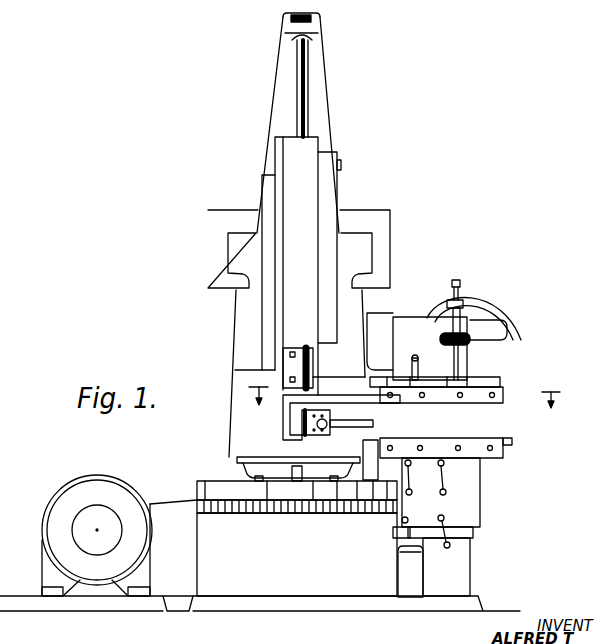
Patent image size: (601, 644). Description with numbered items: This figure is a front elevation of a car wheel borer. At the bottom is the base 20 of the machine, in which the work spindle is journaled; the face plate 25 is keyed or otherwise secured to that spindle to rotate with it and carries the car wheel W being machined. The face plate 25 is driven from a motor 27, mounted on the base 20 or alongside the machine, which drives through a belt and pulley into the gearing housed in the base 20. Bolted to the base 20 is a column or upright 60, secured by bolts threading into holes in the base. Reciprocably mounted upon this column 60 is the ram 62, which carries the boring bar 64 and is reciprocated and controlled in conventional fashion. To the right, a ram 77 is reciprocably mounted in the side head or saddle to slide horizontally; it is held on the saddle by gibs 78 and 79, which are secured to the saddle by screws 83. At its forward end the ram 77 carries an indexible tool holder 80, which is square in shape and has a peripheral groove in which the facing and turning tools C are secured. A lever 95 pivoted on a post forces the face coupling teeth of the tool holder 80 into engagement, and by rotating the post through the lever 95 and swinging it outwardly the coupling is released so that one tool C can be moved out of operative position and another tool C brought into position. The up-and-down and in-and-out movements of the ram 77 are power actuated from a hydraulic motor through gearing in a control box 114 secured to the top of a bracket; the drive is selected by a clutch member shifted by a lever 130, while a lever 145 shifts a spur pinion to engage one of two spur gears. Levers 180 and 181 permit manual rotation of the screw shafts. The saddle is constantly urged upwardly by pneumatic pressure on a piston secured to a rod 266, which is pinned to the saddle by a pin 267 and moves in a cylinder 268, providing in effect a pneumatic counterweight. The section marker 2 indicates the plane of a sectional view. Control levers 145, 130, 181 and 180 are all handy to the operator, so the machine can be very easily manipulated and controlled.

The base 20 is at (307, 583).
The face plate 25 is at (215, 487).
The motor 27 is at (75, 498).
The column or upright 60 is at (240, 410).
The ram 62 is at (307, 210).
The boring bar 64 is at (296, 365).
The ram 77 is at (513, 437).
The gib 78 is at (476, 397).
The gib 79 is at (483, 460).
The indexible tool holder 80 is at (331, 420).
The screws 83 is at (388, 448).
The lever 95 is at (373, 424).
The control box 114 is at (424, 328).
The lever 130 is at (444, 352).
The lever 145 is at (419, 376).
The lever 180 is at (458, 478).
The lever 181 is at (425, 478).
The rod 266 is at (398, 532).
The pin 267 is at (408, 519).
The cylinder 268 is at (413, 566).
The car wheel W is at (236, 455).
The tools C is at (300, 452).
The section line 2- 2 is at (404, 413).